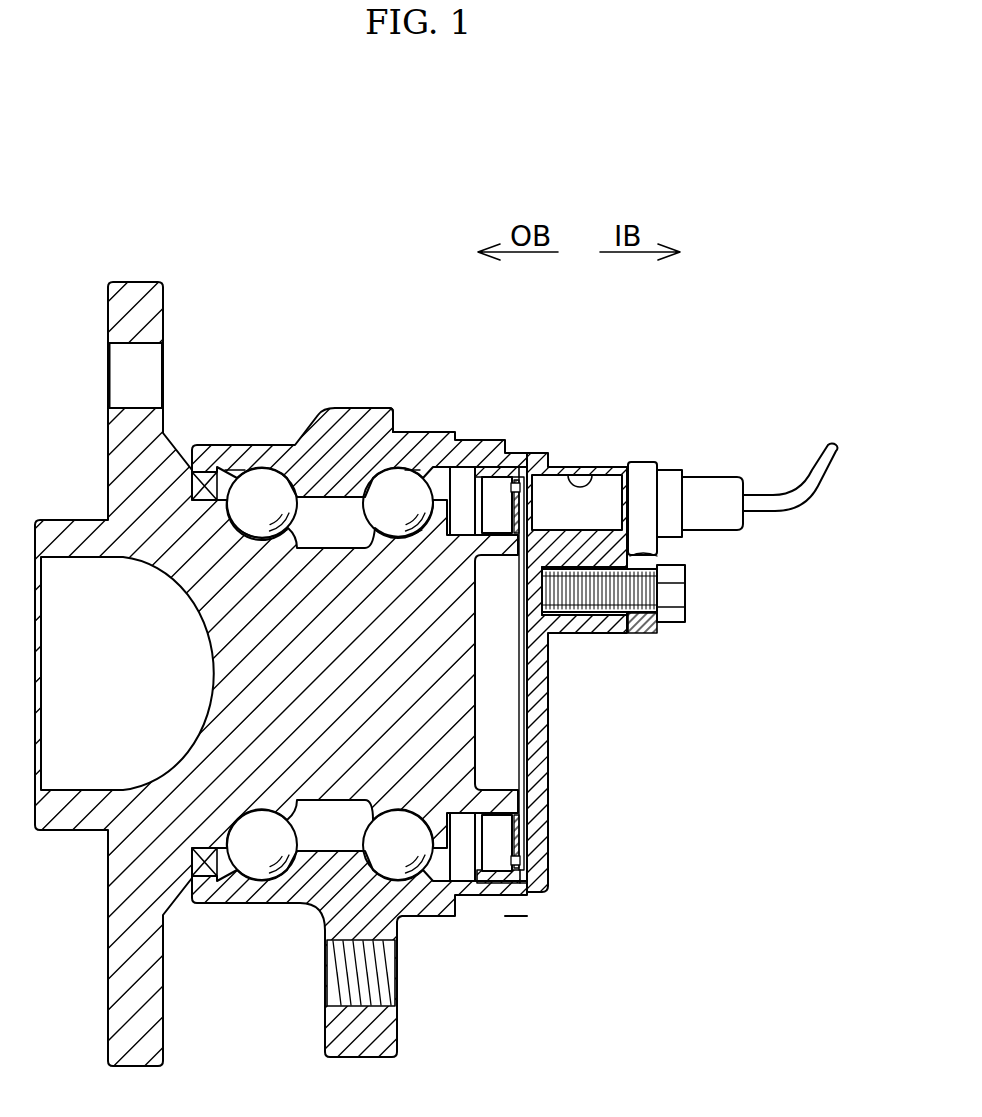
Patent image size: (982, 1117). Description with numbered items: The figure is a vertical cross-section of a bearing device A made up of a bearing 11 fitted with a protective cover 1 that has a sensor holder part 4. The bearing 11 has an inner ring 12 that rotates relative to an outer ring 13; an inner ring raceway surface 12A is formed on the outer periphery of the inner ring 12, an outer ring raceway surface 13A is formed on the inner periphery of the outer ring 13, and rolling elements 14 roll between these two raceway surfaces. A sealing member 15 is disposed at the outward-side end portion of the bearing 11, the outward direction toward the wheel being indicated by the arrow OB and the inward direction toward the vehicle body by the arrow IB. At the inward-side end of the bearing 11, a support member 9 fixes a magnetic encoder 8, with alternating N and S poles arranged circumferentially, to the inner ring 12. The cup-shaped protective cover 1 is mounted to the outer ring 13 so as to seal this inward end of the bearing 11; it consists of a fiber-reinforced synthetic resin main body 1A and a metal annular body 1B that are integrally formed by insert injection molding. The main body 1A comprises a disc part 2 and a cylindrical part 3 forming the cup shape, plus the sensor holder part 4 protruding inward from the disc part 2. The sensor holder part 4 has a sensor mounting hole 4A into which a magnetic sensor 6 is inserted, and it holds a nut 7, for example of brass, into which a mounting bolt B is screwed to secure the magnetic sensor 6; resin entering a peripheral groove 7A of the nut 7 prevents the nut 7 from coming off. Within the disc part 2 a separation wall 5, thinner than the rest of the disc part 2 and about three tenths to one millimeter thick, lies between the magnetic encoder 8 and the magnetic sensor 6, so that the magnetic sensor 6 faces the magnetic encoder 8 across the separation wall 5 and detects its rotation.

The protective cover 1 is at (521, 921).
The main body 1A is at (503, 733).
The metal annular body 1B is at (494, 884).
The disc part 2 is at (549, 801).
The cylindrical part 3 is at (528, 899).
The sensor holder part 4 is at (619, 640).
The sensor mounting hole 4A is at (598, 464).
The separation wall 5 is at (532, 508).
The magnetic sensor 6 is at (708, 480).
The nut 7 is at (557, 634).
The peripheral groove 7A is at (621, 683).
The magnetic encoder 8 is at (518, 480).
The support member 9 is at (490, 478).
The bearing 11 is at (288, 406).
The inner ring 12 is at (240, 665).
The inner ring raceway surface 12A is at (413, 530).
The outer ring 13 is at (372, 418).
The outer ring raceway surface 13A is at (238, 473).
The rolling elements 14 is at (380, 860).
The sealing member 15 is at (205, 480).
The bearing device A is at (684, 426).
The mounting bolt B is at (680, 594).